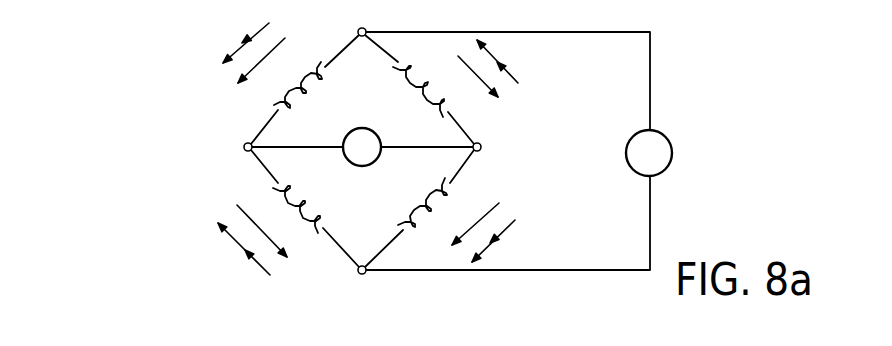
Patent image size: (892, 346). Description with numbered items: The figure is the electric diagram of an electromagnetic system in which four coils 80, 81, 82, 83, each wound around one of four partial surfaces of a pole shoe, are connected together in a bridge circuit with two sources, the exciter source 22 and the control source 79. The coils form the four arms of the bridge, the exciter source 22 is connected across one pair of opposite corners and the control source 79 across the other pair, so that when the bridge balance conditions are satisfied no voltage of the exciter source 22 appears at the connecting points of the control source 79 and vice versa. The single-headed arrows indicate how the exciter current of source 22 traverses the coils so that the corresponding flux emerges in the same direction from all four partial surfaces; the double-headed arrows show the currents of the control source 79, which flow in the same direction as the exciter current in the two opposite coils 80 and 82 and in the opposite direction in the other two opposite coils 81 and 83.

The exciter source 22 is at (672, 146).
The control source 79 is at (375, 108).
The coil 80 is at (314, 62).
The coil 81 is at (418, 105).
The coil 82 is at (450, 190).
The coil 83 is at (313, 197).